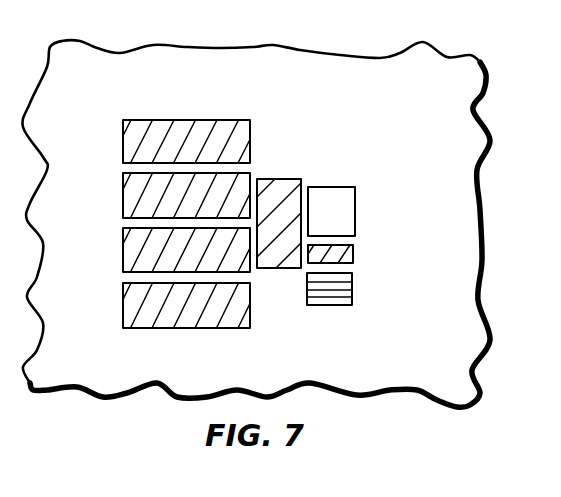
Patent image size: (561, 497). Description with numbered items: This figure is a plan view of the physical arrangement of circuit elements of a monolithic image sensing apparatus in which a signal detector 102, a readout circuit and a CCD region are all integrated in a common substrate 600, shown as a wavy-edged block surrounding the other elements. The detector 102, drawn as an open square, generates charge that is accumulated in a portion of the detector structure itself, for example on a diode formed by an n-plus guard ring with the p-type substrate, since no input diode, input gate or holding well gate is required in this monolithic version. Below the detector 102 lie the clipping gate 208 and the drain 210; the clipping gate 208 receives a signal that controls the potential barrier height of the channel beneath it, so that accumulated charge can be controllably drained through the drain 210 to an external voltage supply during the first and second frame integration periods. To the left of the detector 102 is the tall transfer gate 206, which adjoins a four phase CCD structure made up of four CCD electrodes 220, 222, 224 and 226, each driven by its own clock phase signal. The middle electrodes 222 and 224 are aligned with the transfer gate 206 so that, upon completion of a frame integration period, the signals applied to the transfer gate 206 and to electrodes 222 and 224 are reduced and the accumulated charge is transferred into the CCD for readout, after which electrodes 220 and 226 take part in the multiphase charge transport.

The common substrate 600 is at (460, 88).
The CCD electrode 220 is at (157, 120).
The CCD electrode 222 is at (123, 199).
The CCD electrode 224 is at (123, 241).
The CCD electrode 226 is at (182, 328).
The transfer gate 206 is at (278, 179).
The signal detector 102 is at (338, 187).
The clipping gate 208 is at (353, 255).
The drain 210 is at (352, 293).